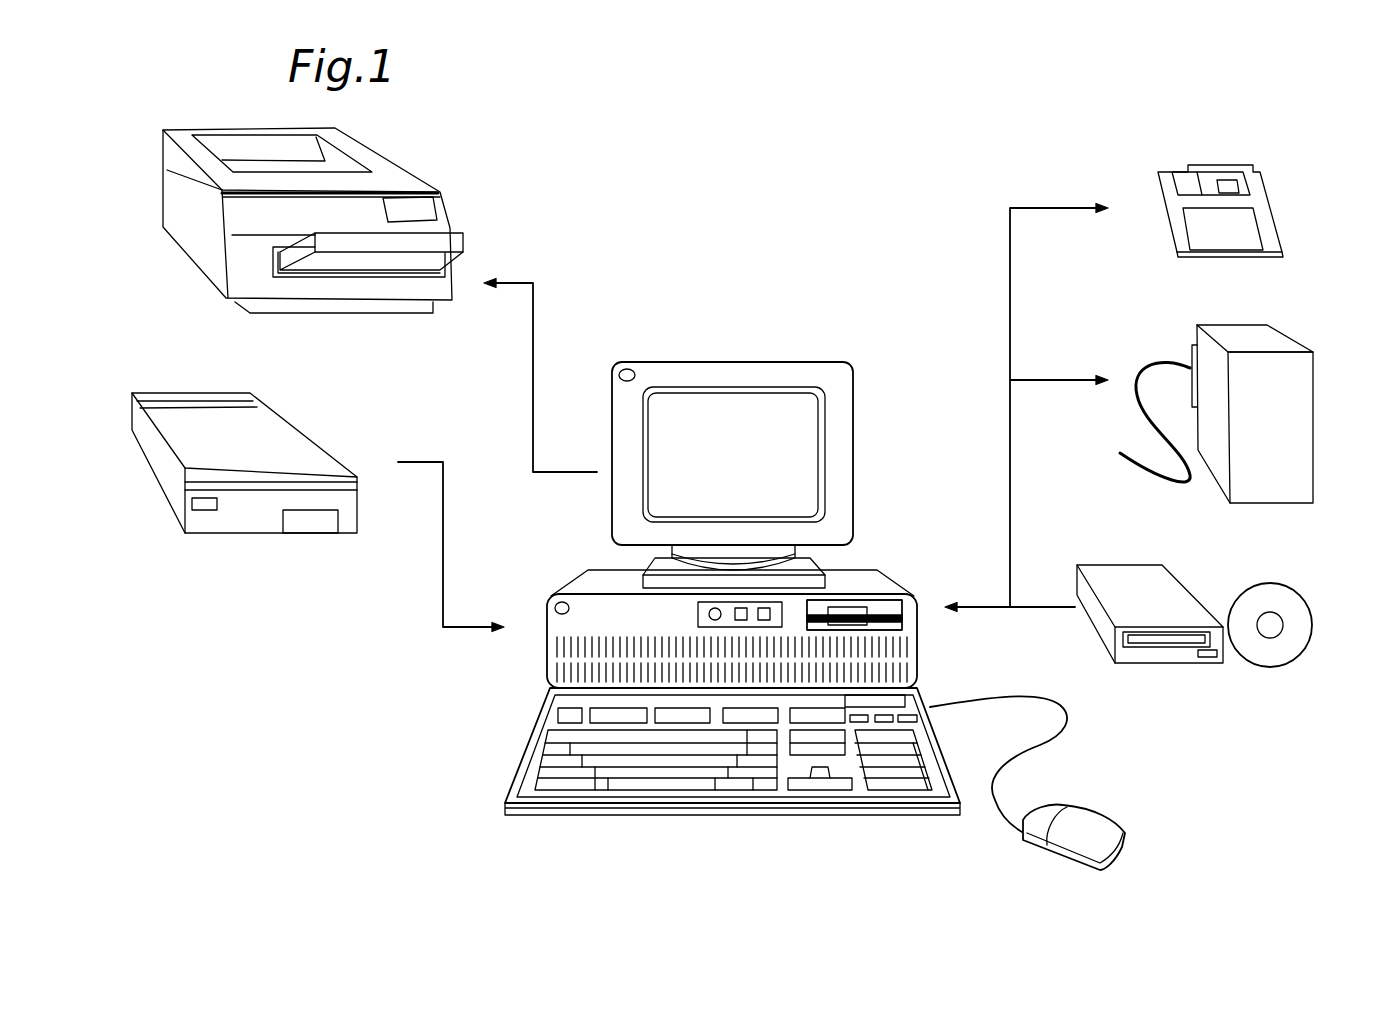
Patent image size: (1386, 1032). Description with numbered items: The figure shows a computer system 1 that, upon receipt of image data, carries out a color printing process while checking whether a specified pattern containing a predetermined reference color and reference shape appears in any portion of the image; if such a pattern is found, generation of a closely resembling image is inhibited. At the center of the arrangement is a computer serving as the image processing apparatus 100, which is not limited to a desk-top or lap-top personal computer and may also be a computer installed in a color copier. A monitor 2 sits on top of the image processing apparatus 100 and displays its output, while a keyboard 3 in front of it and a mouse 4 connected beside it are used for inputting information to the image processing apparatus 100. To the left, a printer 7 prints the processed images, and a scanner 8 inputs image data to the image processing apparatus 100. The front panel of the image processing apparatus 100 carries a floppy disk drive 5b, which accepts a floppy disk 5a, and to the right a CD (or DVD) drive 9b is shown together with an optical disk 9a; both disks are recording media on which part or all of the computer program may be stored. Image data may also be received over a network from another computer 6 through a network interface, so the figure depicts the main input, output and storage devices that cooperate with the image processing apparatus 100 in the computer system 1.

The computer system 1 is at (746, 841).
The monitor 2 is at (612, 443).
The keyboard 3 is at (535, 720).
The mouse 4 is at (1063, 840).
The floppy disk 5a is at (1252, 228).
The floppy disk drive 5b is at (883, 600).
The another computer 6 is at (1268, 332).
The printer 7 is at (400, 177).
The scanner 8 is at (282, 442).
The optical disk 9a is at (1297, 600).
The CD (or DVD) drive 9b is at (1133, 583).
The image processing apparatus 100 is at (547, 627).